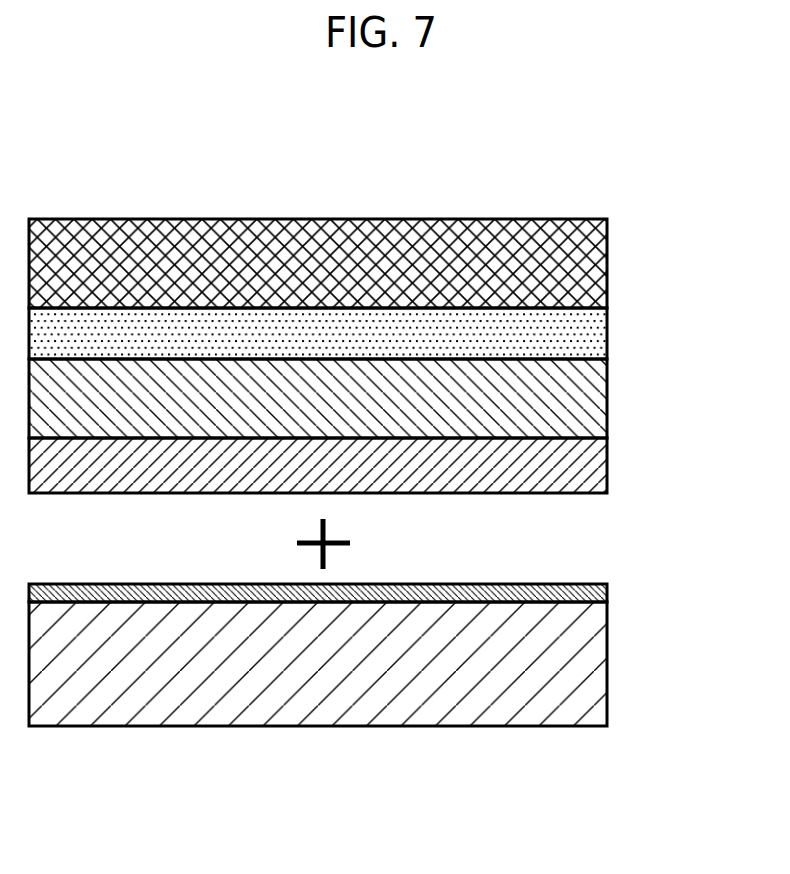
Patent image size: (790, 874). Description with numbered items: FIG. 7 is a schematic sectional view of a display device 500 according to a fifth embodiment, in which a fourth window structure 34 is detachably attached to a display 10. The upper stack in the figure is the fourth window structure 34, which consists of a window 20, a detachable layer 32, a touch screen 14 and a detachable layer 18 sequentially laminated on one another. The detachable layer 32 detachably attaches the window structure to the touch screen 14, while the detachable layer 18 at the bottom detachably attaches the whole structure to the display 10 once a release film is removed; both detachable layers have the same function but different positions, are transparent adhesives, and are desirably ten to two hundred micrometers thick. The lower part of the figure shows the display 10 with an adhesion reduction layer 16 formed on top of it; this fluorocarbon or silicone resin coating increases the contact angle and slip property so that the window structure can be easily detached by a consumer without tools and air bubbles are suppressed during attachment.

The display device 500 is at (171, 176).
The window 20 is at (599, 260).
The detachable layer 32 is at (599, 338).
The touch screen 14 is at (599, 399).
The detachable layer 18 is at (350, 465).
The fourth window structure 34 is at (382, 356).
The adhesion reduction layer 16 is at (599, 594).
The display 10 is at (599, 661).